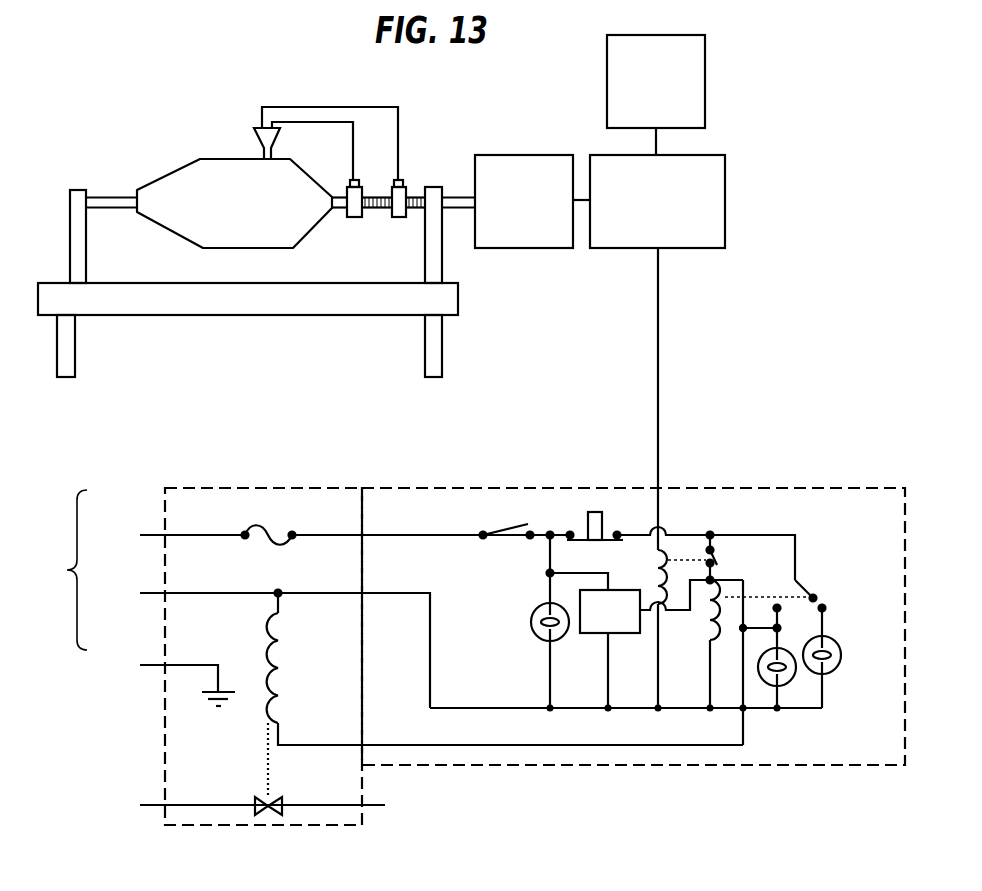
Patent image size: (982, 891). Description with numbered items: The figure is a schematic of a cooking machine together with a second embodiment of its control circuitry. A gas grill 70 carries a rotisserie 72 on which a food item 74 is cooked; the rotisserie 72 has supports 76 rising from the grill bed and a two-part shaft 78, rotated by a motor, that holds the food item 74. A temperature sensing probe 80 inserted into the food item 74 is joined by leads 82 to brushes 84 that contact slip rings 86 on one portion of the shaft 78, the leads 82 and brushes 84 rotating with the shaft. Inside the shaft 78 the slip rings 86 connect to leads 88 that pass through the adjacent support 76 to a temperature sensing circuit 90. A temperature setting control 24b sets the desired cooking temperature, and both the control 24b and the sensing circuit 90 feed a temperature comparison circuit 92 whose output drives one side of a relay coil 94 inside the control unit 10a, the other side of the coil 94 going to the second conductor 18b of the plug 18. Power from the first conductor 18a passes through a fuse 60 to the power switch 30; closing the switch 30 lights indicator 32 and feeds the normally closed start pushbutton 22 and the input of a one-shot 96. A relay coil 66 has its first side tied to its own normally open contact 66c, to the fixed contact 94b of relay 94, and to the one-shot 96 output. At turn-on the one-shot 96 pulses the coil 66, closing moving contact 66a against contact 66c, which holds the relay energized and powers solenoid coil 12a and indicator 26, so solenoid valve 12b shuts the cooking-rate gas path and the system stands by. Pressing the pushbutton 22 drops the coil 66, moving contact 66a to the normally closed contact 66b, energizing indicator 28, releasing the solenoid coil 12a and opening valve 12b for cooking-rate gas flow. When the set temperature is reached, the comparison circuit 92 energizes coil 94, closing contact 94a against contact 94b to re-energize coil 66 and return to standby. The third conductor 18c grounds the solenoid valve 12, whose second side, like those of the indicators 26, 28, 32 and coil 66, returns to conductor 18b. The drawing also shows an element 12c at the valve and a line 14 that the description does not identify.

The control unit 10a is at (683, 488).
The solenoid valve 12 is at (316, 826).
The solenoid coil 12a is at (262, 635).
The solenoid valve 12b is at (276, 815).
The valve actuating link 12c is at (268, 772).
The fluid supply line 14 is at (152, 804).
The plug 18 is at (63, 570).
The first conductor 18a is at (152, 534).
The second conductor 18b is at (152, 592).
The third conductor 18c is at (152, 664).
The start pushbutton 22 is at (583, 512).
The temperature setting control 24b is at (705, 40).
The indicator 26 is at (785, 685).
The indicator 28 is at (830, 672).
The power switch 30 is at (507, 527).
The indicator 32 is at (563, 635).
The fuse 60 is at (270, 532).
The relay coil 66 is at (707, 612).
The moving contact 66a is at (805, 592).
The normally closed contact 66b is at (828, 604).
The normally open contact 66c is at (775, 606).
The gas grill 70 is at (455, 315).
The rotisserie 72 is at (117, 164).
The food item 74 is at (193, 160).
The supports 76 is at (66, 262).
The two-part shaft 78 is at (122, 210).
The temperature sensing probe 80 is at (255, 135).
The leads 82 is at (333, 107).
The brushes 84 is at (357, 185).
The slip rings 86 is at (393, 217).
The leads 88 is at (417, 190).
The temperature sensing circuit 90 is at (548, 248).
The temperature comparison circuit 92 is at (725, 160).
The relay coil 94 is at (660, 575).
The normally open contact 94a is at (713, 558).
The fixed contact 94b is at (712, 567).
The one-shot 96 is at (618, 633).